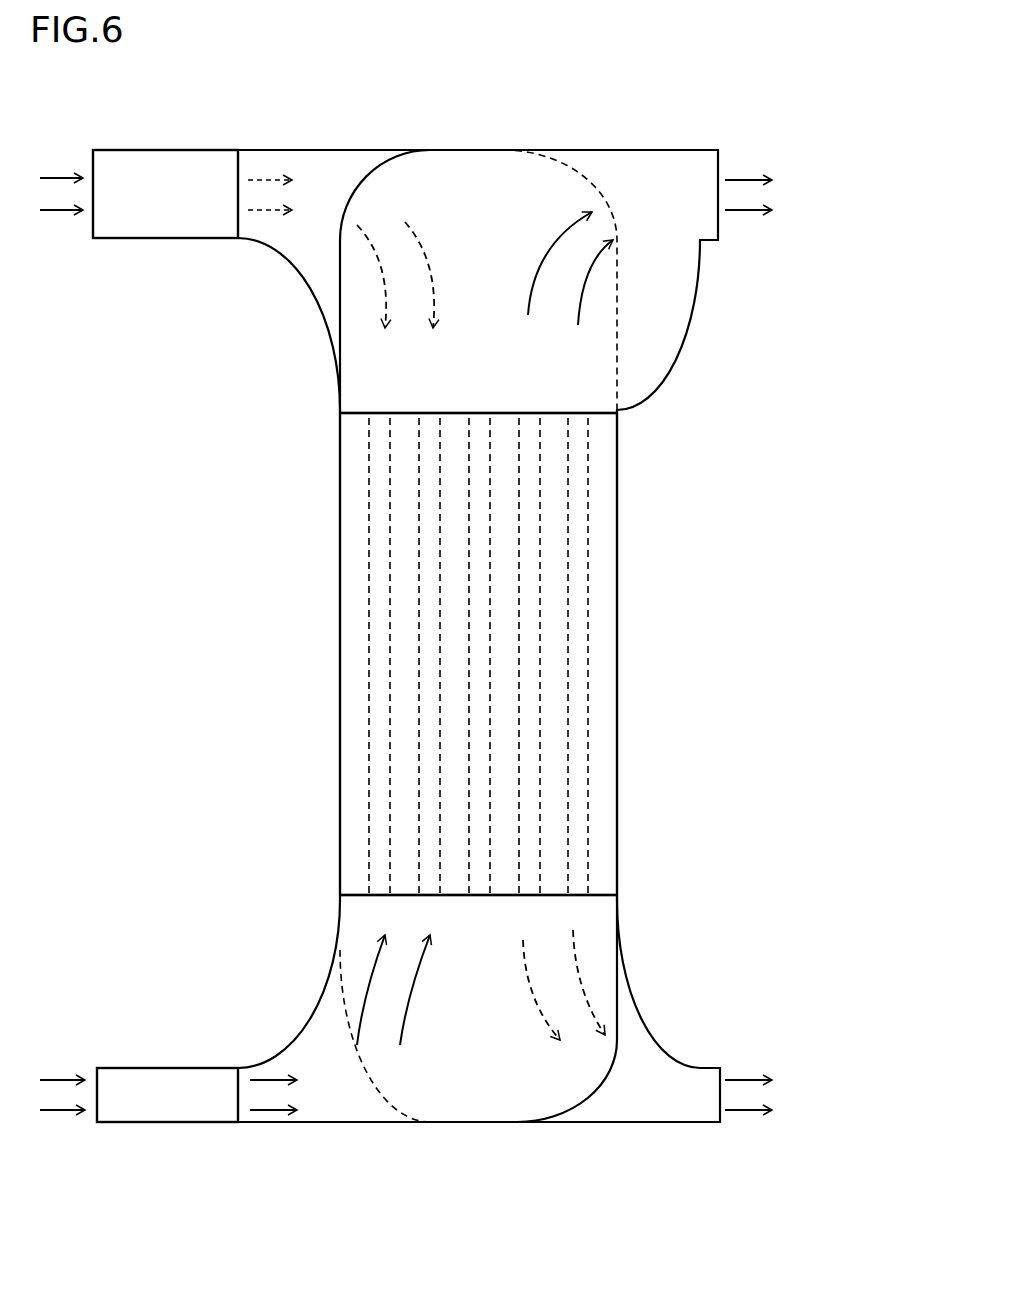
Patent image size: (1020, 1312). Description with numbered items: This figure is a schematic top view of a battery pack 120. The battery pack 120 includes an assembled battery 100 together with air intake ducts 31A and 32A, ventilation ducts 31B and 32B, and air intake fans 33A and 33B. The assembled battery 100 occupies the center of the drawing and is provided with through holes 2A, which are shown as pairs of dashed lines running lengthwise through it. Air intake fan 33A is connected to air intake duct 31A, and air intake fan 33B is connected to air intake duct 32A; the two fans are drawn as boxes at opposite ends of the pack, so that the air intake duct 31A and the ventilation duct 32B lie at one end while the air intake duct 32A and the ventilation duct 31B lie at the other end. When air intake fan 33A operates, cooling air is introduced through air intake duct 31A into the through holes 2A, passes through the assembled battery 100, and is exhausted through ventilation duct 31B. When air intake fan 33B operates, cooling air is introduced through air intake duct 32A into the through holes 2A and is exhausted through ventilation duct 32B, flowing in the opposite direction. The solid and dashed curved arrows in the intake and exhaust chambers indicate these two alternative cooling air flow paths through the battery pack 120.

The battery pack 120 is at (902, 79).
The assembled battery 100 is at (617, 661).
The through holes 2A is at (380, 432).
The air intake duct 31A is at (300, 1125).
The ventilation duct 31B is at (672, 150).
The air intake duct 32A is at (299, 150).
The ventilation duct 32B is at (672, 1125).
The air intake fan 33A is at (165, 1068).
The air intake fan 33B is at (162, 150).